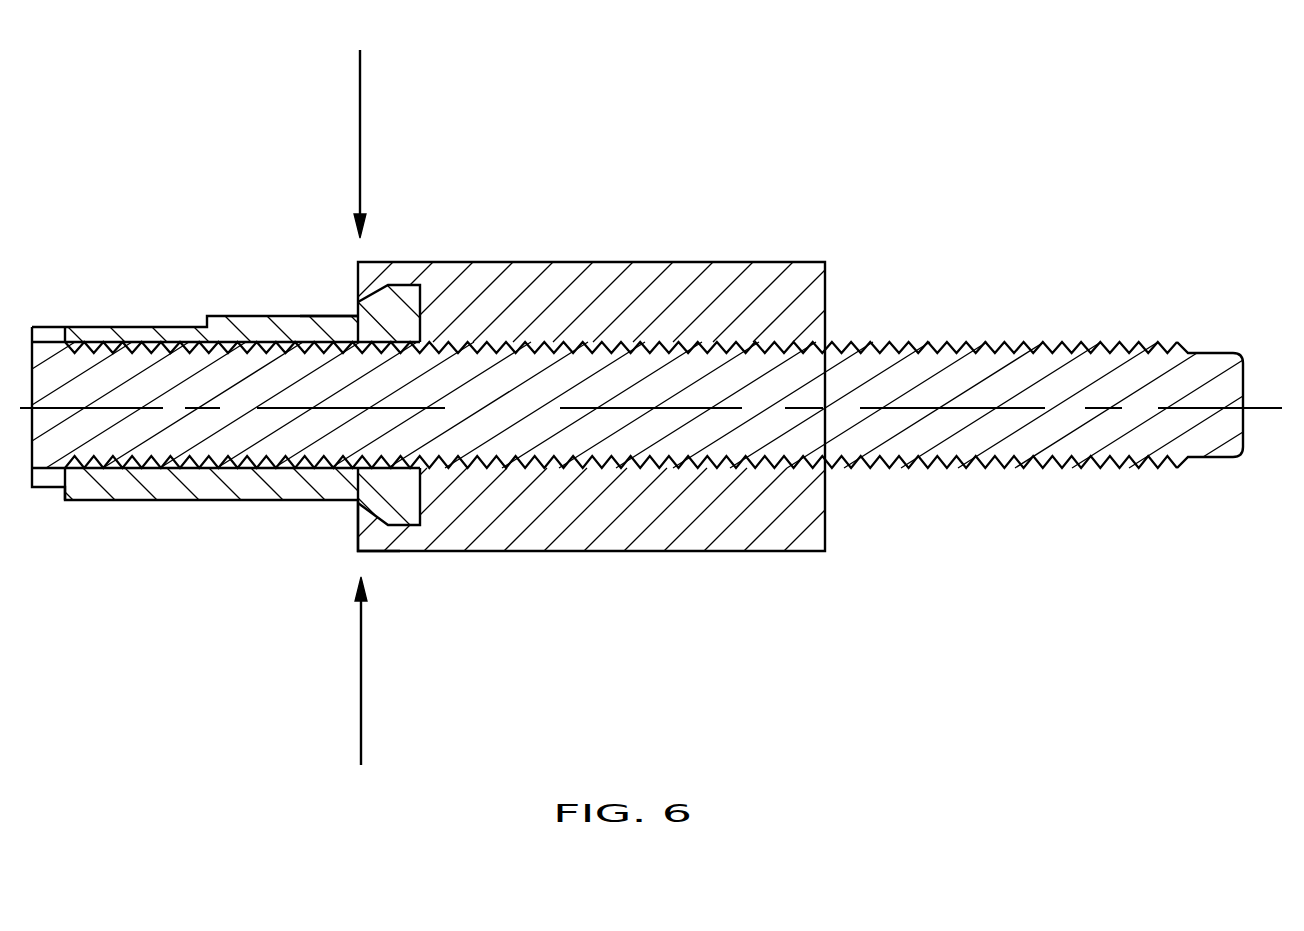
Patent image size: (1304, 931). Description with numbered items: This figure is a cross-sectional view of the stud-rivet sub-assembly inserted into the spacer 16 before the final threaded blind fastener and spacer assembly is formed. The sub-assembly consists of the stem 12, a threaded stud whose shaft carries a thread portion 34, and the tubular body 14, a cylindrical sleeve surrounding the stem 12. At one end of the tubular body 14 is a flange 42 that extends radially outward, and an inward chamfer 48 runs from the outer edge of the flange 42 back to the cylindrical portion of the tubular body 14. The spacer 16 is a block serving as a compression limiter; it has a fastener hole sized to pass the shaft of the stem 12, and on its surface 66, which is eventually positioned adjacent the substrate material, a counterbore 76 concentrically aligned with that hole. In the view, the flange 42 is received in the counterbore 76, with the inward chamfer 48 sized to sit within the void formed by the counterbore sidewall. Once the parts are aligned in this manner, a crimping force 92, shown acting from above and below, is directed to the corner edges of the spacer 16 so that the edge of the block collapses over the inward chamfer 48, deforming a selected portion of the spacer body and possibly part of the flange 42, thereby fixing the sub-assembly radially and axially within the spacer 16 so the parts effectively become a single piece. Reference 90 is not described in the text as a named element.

The stem 12 is at (933, 268).
The tubular body 14 is at (192, 513).
The spacer 16 is at (737, 238).
The thread portion 34 is at (897, 470).
The flange 42 is at (356, 512).
The inward chamfer 48 is at (358, 262).
The surface 66 is at (358, 550).
The counterbore 76 is at (320, 295).
The assembly 90 is at (900, 177).
The crimping force 92 is at (360, 122).